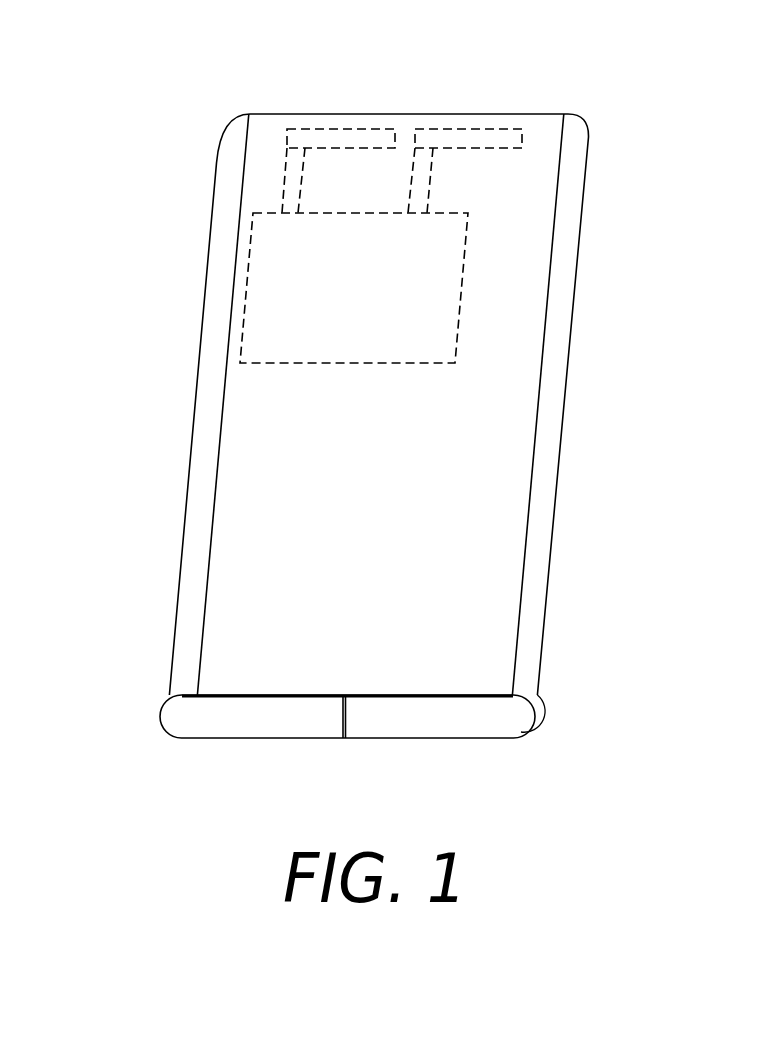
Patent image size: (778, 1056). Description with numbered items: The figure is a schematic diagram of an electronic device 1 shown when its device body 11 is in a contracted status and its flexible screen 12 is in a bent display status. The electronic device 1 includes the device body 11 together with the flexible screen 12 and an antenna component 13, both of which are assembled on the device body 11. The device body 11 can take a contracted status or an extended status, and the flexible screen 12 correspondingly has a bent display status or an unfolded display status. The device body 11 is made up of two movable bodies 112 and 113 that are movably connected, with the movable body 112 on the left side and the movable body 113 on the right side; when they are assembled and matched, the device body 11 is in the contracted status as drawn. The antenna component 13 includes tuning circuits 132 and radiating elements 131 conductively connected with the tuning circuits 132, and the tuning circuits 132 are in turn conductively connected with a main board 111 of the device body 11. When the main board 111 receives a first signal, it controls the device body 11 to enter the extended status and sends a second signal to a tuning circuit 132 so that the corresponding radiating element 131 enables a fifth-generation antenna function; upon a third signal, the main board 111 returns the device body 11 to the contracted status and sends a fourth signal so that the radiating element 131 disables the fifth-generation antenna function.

The electronic device 1 is at (358, 402).
The device body 11 is at (407, 730).
The flexible screen 12 is at (523, 542).
The antenna component 13 is at (457, 108).
The main board 111 is at (438, 312).
The movable body 112 is at (205, 712).
The movable body 113 is at (390, 712).
The radiating element 131 is at (348, 138).
The tuning circuit 132 is at (625, 46).